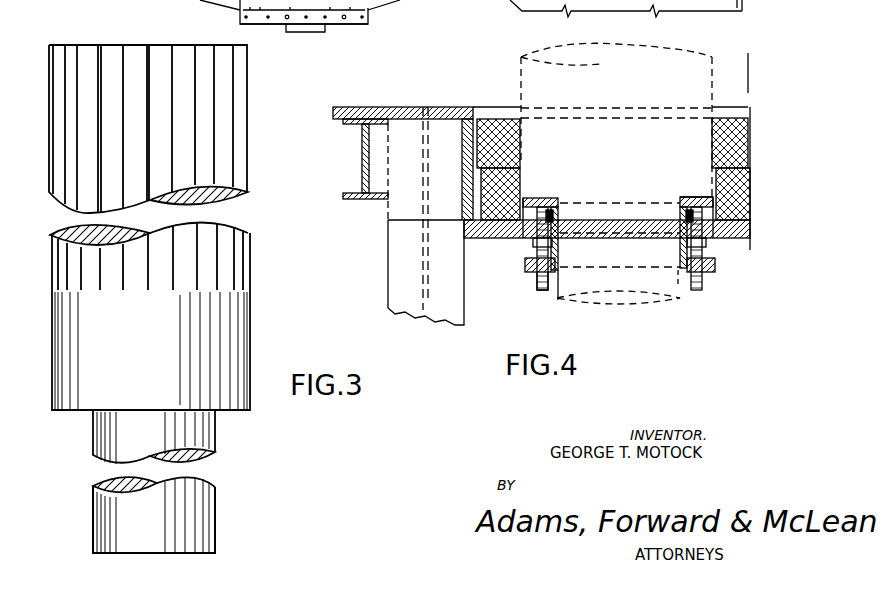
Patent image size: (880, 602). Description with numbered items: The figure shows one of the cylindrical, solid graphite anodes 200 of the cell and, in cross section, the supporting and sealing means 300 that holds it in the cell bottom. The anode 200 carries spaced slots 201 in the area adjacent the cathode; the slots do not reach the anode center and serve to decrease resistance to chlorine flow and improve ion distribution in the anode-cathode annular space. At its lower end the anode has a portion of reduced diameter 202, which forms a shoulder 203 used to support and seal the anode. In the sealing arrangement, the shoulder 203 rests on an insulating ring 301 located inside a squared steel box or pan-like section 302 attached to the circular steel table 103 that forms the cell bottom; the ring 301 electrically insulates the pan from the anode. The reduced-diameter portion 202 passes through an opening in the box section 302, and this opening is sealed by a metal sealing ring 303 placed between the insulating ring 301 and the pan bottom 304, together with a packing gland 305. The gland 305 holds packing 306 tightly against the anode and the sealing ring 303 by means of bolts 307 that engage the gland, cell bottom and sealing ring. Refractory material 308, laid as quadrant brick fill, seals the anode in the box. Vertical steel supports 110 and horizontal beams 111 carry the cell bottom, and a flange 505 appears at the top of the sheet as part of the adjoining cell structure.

In FIG. 4, the circular steel table 103 is at (404, 107).
In FIG. 4, the vertical steel supports 110 is at (410, 285).
In FIG. 4, the horizontal beams 111 is at (362, 170).
In FIG. 3, the anode 200 is at (50, 357).
In FIG. 4, the anode 200 is at (514, 88).
In FIG. 3, the spaced slots 201 is at (145, 55).
In FIG. 3, the portion of reduced diameter 202 is at (213, 484).
In FIG. 4, the portion of reduced diameter 202 is at (675, 297).
In FIG. 3, the shoulder 203 is at (220, 410).
In FIG. 4, the shoulder 203 is at (684, 198).
In FIG. 4, the supporting and sealing means 300 is at (553, 290).
In FIG. 4, the insulating ring 301 is at (524, 198).
In FIG. 4, the box or pan-like section 302 is at (470, 183).
In FIG. 4, the metal sealing ring 303 is at (510, 200).
In FIG. 4, the pan bottom 304 is at (518, 233).
In FIG. 4, the packing gland 305 is at (525, 266).
In FIG. 4, the packing 306 is at (554, 224).
In FIG. 4, the bolts 307 is at (538, 286).
In FIG. 4, the refractory material 308 is at (512, 144).
In FIG. 4, the flange 505 is at (370, 12).